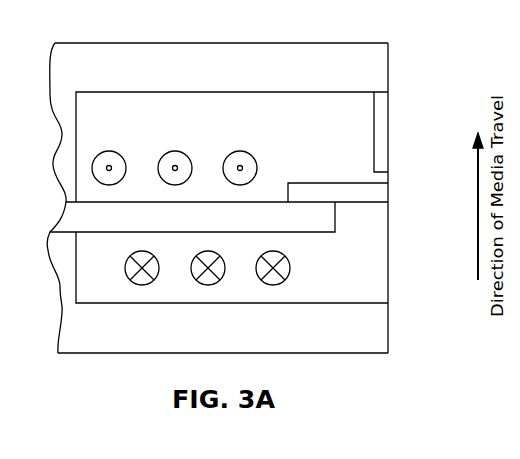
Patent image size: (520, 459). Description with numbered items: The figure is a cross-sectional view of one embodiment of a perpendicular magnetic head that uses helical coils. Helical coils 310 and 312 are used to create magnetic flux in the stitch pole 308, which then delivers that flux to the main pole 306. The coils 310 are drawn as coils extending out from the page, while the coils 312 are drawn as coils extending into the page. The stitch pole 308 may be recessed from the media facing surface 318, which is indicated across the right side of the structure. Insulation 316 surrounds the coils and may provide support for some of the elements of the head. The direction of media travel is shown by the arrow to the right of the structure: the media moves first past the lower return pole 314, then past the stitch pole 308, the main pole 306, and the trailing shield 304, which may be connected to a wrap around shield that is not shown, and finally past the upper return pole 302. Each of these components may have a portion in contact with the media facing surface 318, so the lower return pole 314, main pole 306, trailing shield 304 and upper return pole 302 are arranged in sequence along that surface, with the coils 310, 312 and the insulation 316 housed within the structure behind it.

The upper return pole 302 is at (300, 75).
The trailing shield 304 is at (388, 135).
The main pole 306 is at (388, 187).
The stitch pole 308 is at (247, 226).
The helical coils extending out from the page 310 is at (107, 151).
The helical coils extending into the page 312 is at (125, 272).
The lower return pole 314 is at (248, 338).
The insulation 316 is at (337, 145).
The media facing surface 318 is at (389, 59).